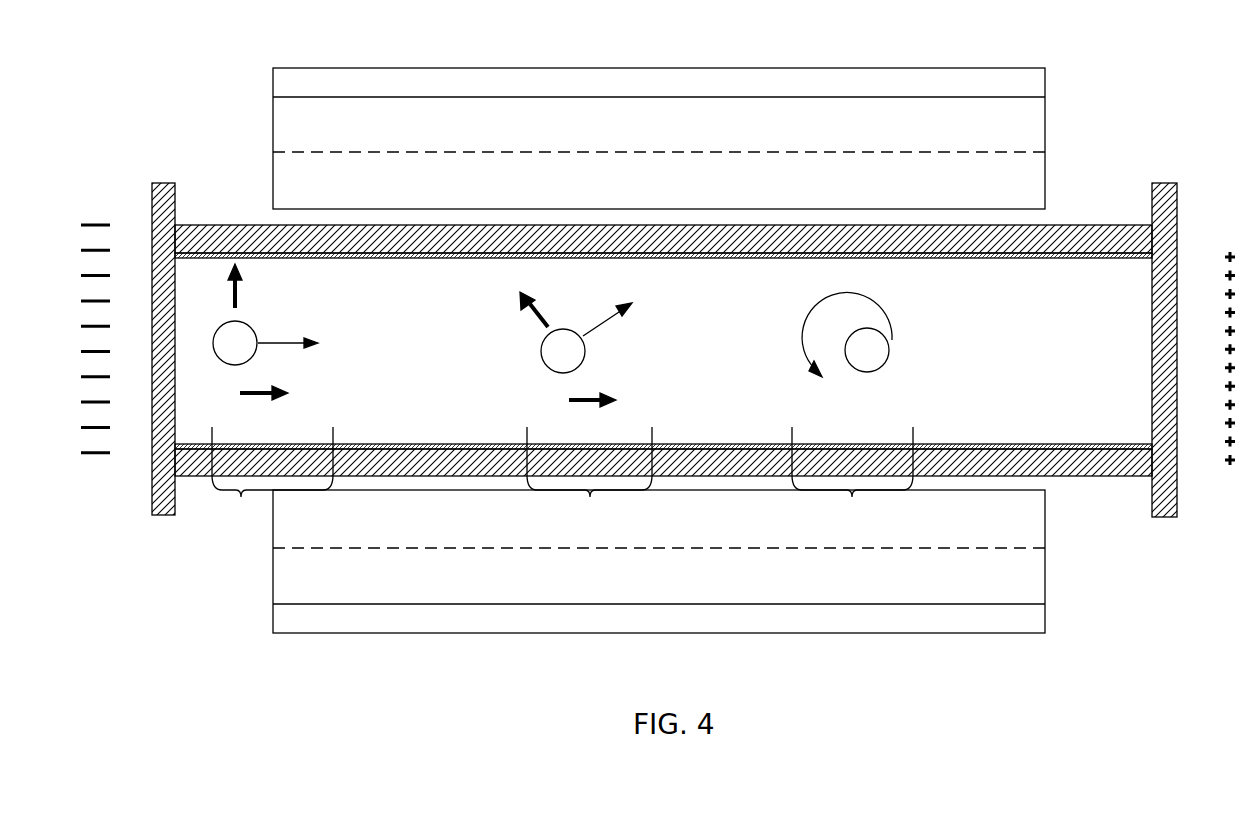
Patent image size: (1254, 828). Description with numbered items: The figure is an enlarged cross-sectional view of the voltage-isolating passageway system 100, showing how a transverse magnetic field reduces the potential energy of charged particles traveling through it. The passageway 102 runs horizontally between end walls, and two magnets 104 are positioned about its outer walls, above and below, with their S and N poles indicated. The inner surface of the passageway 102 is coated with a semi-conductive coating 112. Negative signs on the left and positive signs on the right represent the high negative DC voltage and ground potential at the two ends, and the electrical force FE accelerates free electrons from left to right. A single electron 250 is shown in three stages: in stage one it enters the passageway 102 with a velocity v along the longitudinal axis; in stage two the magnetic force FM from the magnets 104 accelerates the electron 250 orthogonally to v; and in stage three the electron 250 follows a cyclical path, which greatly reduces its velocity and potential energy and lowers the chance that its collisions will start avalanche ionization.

The voltage-isolating passageway system 100 is at (658, 332).
The passageway 102 is at (250, 225).
The magnets 104 is at (1055, 100).
The semi-conductive coating 112 is at (1070, 258).
The electron 250 is at (250, 328).